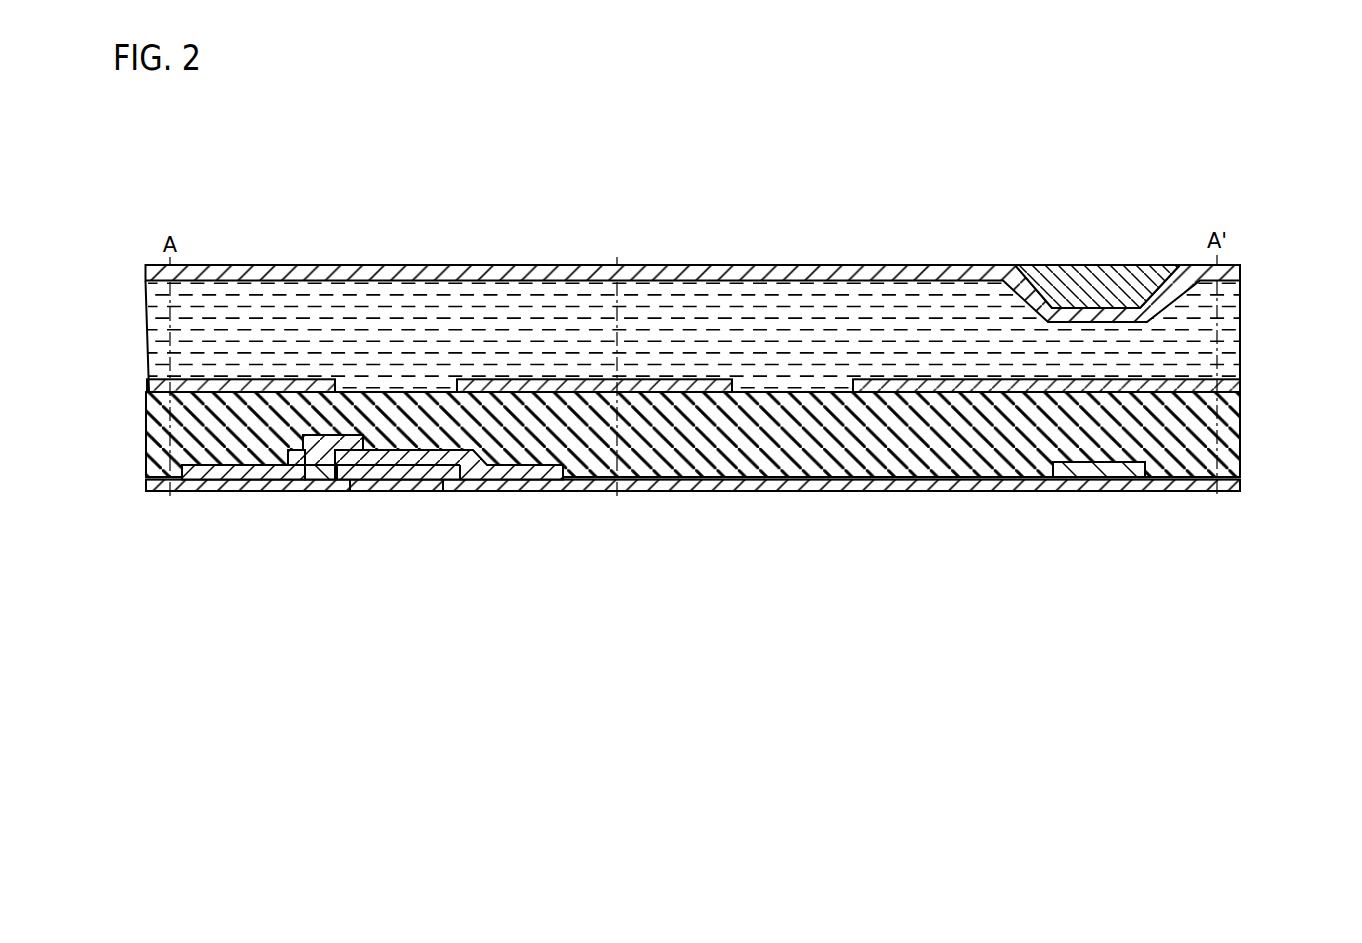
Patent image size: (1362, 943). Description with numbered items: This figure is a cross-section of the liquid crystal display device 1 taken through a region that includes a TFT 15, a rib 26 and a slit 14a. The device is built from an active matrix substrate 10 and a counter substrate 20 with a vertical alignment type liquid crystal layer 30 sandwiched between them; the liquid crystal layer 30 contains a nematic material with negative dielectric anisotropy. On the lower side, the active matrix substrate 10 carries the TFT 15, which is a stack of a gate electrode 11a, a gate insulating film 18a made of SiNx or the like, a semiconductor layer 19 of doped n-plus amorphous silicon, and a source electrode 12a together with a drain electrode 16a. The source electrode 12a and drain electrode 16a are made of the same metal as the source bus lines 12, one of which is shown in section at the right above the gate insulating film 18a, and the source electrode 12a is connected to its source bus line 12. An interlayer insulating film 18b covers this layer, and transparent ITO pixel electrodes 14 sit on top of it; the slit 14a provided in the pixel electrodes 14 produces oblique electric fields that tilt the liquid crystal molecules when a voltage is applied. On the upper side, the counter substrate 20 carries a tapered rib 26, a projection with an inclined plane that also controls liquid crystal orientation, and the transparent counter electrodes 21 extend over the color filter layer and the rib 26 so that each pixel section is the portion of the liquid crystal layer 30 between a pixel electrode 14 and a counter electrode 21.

The liquid crystal display device 1 is at (998, 187).
The active matrix substrate 10 is at (1299, 378).
The gate electrode 11a is at (402, 486).
The source bus line 12 is at (1100, 470).
The source electrode 12a is at (522, 476).
The pixel electrode 14 is at (147, 388).
The slit 14a is at (405, 376).
The TFT 15 is at (317, 417).
The drain electrode 16a is at (259, 476).
The gate insulating film 18a is at (664, 479).
The interlayer insulating film 18b is at (743, 449).
The semiconductor layer 19 is at (320, 478).
The counter substrate 20 is at (1299, 265).
The counter electrode 21 is at (1232, 274).
The rib 26 is at (1095, 264).
The liquid crystal layer 30 is at (1242, 350).